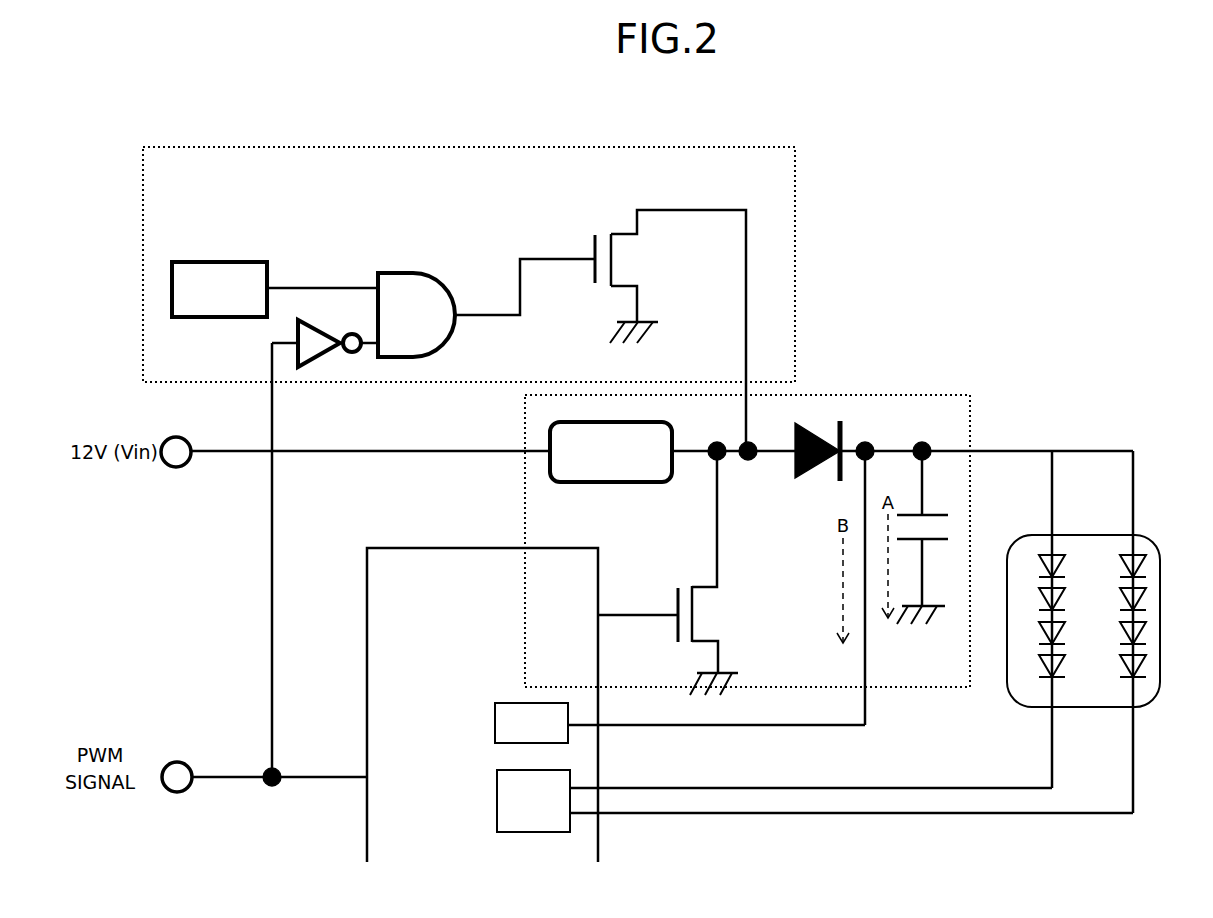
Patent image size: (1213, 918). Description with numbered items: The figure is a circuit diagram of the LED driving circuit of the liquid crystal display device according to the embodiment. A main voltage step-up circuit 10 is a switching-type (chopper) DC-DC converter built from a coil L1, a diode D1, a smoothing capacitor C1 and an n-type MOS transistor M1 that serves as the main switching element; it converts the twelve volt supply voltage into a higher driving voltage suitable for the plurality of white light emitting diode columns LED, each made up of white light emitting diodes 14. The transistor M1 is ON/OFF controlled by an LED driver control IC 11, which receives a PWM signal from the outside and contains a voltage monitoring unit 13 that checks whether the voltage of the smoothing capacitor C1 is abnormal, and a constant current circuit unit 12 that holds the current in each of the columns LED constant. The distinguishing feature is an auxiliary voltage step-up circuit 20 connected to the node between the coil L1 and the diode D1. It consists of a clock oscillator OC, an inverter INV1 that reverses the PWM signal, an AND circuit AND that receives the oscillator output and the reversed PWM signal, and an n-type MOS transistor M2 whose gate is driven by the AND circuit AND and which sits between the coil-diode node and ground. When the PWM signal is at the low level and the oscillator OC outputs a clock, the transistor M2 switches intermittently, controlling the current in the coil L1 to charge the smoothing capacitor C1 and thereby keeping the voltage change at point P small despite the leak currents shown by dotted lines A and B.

The main voltage step-up circuit 10 is at (905, 392).
The LED driver control IC 11 is at (433, 547).
The constant current circuit unit 12 is at (497, 792).
The voltage monitoring unit 13 is at (495, 702).
The white light emitting diode 14 is at (1062, 552).
The auxiliary voltage step-up circuit 20 is at (730, 142).
The clock oscillator OC is at (223, 258).
The inverter INV1 is at (315, 327).
The AND circuit AND is at (410, 272).
The n-type MOS transistor M2 is at (614, 265).
The n-type MOS transistor M1 is at (697, 615).
The coil L1 is at (552, 481).
The diode D1 is at (812, 428).
The smoothing capacitor C1 is at (937, 513).
The white light emitting diode columns LED is at (1100, 632).